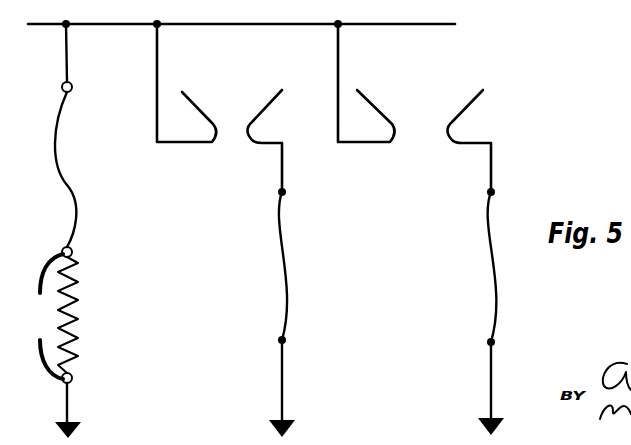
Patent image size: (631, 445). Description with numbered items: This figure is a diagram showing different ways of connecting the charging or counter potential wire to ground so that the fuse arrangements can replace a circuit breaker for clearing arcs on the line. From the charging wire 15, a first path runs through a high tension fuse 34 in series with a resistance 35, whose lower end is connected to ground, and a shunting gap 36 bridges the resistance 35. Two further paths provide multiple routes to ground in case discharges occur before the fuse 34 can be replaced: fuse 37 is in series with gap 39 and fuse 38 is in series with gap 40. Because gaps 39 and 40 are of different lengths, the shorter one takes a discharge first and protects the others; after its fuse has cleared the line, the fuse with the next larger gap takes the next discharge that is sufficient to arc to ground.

The charging wire 15 is at (370, 23).
The high tension fuse 34 is at (68, 181).
The resistance 35 is at (72, 317).
The shunting gap 36 is at (33, 290).
The fuse 37 is at (287, 273).
The fuse 38 is at (502, 305).
The gap 39 is at (229, 138).
The gap 40 is at (415, 130).